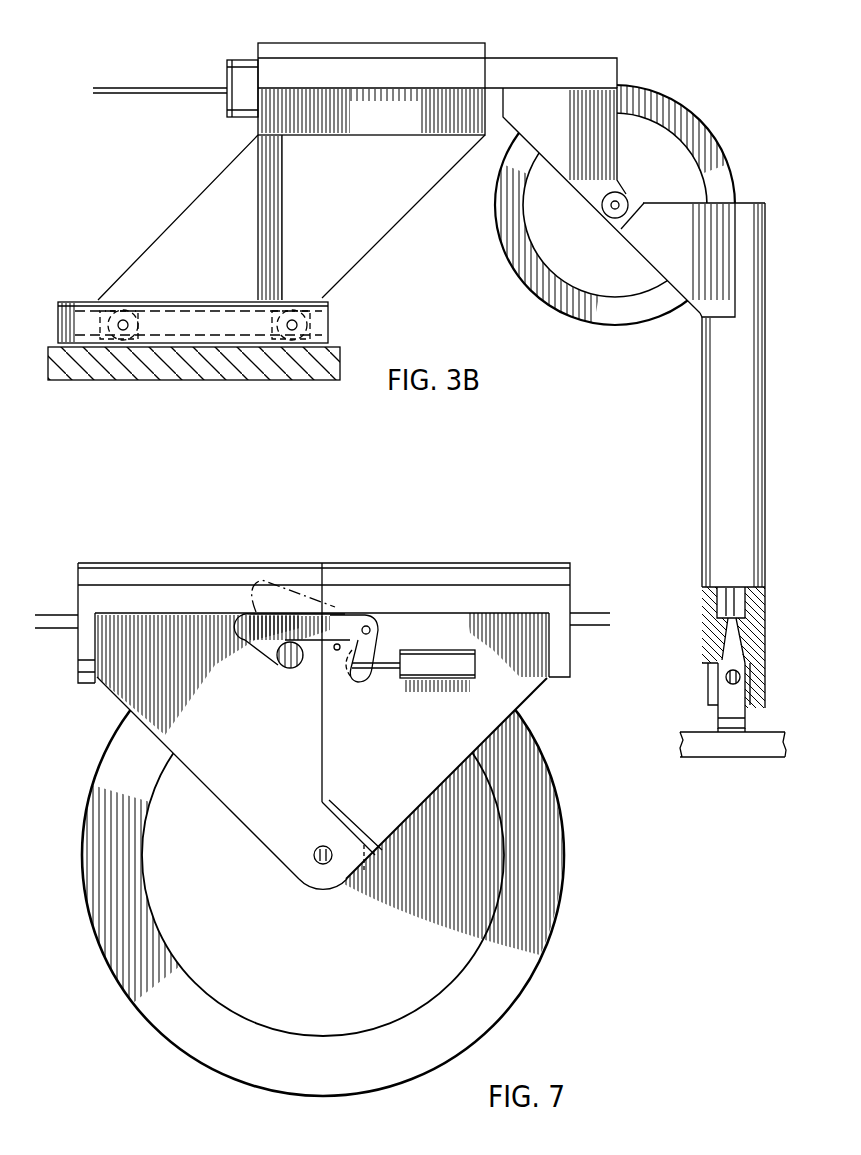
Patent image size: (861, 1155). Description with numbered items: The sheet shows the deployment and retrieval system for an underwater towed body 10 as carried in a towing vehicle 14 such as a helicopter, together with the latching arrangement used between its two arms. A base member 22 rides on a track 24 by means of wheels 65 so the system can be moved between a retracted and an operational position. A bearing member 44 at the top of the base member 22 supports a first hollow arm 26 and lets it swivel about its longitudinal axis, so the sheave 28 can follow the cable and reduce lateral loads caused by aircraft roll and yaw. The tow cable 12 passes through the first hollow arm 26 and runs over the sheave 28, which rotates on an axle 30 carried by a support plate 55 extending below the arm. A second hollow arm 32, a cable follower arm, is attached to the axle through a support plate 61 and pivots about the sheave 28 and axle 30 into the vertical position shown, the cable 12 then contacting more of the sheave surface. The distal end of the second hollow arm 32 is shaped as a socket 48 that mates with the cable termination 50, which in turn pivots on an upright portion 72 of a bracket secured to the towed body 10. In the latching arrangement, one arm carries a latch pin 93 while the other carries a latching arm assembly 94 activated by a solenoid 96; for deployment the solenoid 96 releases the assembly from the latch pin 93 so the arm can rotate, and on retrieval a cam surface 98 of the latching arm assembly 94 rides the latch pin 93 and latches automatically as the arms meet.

In FIG. 3B, the towed body 10 is at (691, 743).
In FIG. 3B, the tow cable 12 is at (148, 86).
In FIG. 7, the tow cable 12 is at (58, 613).
In FIG. 3B, the towing vehicle 14 is at (109, 375).
In FIG. 3B, the base member 22 is at (210, 193).
In FIG. 3B, the track 24 is at (74, 301).
In FIG. 3B, the first hollow arm 26 is at (548, 57).
In FIG. 7, the first hollow arm 26 is at (200, 563).
In FIG. 3B, the sheave 28 is at (681, 100).
In FIG. 7, the sheave 28 is at (533, 979).
In FIG. 3B, the axle 30 is at (611, 208).
In FIG. 7, the axle 30 is at (319, 861).
In FIG. 3B, the second hollow arm 32 is at (706, 388).
In FIG. 7, the second hollow arm 32 is at (420, 563).
In FIG. 3B, the bearing member 44 is at (352, 43).
In FIG. 3B, the socket 48 is at (722, 638).
In FIG. 3B, the cable termination 50 is at (727, 646).
In FIG. 3B, the support plate 55 is at (542, 140).
In FIG. 7, the support plate 55 is at (205, 791).
In FIG. 3B, the support plate 61 is at (713, 212).
In FIG. 7, the support plate 61 is at (526, 703).
In FIG. 3B, the wheels 65 is at (142, 318).
In FIG. 3B, the upright portion 72 is at (721, 703).
In FIG. 7, the latch pin 93 is at (292, 669).
In FIG. 7, the latching arm assembly 94 is at (343, 618).
In FIG. 7, the solenoid 96 is at (430, 650).
In FIG. 7, the cam surface 98 is at (249, 639).